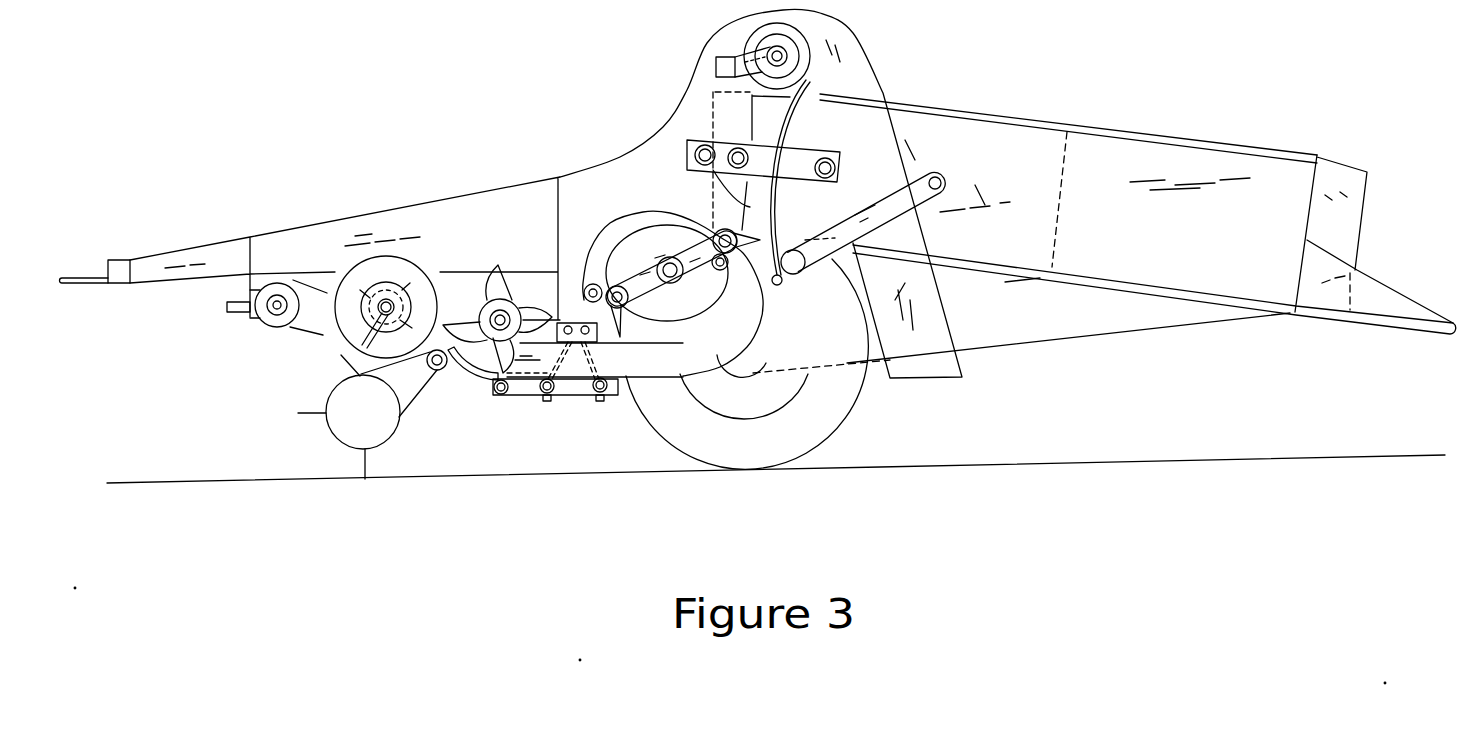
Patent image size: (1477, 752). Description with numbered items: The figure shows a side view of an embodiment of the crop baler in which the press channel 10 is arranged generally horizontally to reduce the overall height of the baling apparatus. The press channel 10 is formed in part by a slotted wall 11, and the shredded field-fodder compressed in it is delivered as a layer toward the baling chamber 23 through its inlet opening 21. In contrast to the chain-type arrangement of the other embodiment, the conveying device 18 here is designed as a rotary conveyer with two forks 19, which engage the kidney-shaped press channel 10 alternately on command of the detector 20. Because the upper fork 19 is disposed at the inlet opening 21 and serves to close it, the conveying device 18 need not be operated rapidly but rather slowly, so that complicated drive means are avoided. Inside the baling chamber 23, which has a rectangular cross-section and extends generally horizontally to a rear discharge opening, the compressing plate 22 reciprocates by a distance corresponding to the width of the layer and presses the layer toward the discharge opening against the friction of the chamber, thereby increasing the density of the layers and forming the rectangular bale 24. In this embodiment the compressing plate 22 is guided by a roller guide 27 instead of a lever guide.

The press channel 10 is at (673, 357).
The slotted wall 11 is at (538, 362).
The conveying device 18 is at (647, 275).
The forks 19 is at (593, 285).
The detector 20 is at (777, 285).
The inlet opening 21 is at (707, 230).
The compressing plate 22 is at (763, 110).
The baling chamber 23 is at (958, 135).
The rectangular bale 24 is at (1138, 172).
The roller guide 27 is at (803, 160).